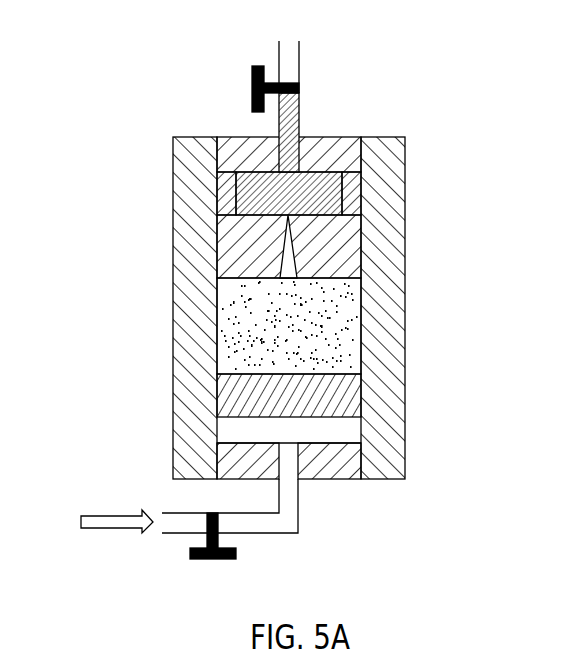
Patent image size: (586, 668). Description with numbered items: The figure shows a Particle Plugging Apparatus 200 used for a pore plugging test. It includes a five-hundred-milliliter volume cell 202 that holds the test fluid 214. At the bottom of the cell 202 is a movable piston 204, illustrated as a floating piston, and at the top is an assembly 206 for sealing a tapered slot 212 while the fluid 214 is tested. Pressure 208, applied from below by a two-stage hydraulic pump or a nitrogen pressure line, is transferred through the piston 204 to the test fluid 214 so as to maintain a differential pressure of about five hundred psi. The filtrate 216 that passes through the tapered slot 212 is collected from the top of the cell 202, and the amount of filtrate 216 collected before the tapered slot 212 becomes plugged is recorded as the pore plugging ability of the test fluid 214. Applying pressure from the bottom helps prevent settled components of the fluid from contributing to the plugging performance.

The Particle Plugging Apparatus 200 is at (127, 63).
The volume cell 202 is at (405, 425).
The movable piston 204 is at (355, 385).
The assembly 206 is at (352, 124).
The pressure 208 is at (105, 514).
The tapered slot 212 is at (361, 245).
The test fluid 214 is at (306, 336).
The filtrate 216 is at (306, 203).